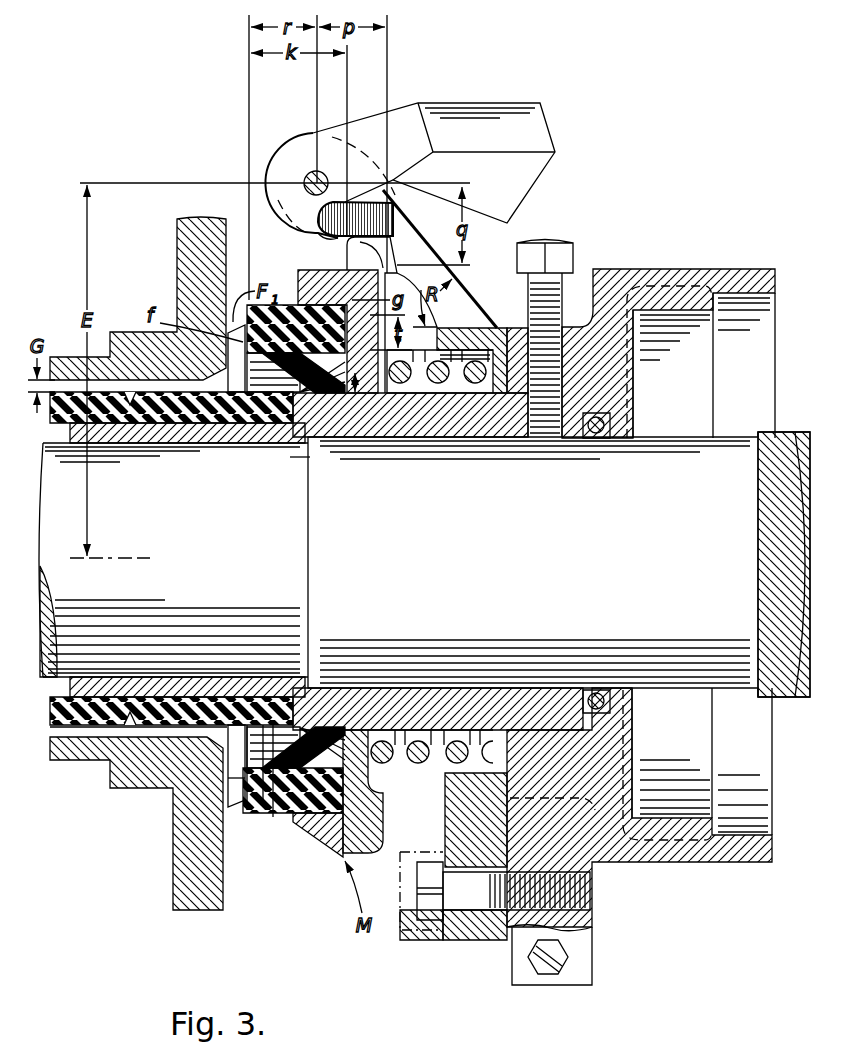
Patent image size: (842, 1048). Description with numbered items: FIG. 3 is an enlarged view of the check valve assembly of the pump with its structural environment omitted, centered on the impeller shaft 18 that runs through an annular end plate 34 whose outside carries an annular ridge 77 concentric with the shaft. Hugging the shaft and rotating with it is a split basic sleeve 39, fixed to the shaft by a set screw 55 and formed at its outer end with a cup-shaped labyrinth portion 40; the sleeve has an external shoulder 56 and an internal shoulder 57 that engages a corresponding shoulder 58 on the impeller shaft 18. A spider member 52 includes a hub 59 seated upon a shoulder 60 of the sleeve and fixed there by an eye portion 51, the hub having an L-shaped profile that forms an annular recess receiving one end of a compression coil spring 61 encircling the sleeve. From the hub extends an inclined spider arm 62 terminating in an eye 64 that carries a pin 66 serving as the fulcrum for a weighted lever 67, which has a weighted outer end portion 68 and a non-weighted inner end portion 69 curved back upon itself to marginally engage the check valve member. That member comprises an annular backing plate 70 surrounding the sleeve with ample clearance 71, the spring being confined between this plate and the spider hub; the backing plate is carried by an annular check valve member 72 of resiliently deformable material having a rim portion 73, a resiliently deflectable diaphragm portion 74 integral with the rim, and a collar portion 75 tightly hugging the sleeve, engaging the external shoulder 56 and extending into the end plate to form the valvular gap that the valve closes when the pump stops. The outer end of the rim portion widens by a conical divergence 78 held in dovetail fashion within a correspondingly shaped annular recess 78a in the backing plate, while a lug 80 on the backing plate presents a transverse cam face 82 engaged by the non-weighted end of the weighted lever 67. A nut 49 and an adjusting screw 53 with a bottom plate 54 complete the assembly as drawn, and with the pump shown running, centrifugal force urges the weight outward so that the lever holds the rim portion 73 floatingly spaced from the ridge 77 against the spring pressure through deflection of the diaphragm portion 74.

The impeller shaft 18 is at (173, 560).
The annular end plate 34 is at (177, 267).
The basic sleeve 39 is at (410, 423).
The cup-shaped labyrinth portion 40 is at (680, 268).
The nut 49 is at (548, 978).
The eye portion 51 is at (472, 941).
The spider member 52 is at (466, 276).
The adjusting screw 53 is at (423, 877).
The bottom plate 54 is at (420, 938).
The set screw 55 is at (558, 241).
The external shoulder 56 is at (243, 443).
The internal shoulder 57 is at (307, 443).
The shoulder 58 is at (310, 538).
The hub 59 is at (490, 343).
The shoulder 60 is at (500, 395).
The compression coil spring 61 is at (437, 385).
The spider arm 62 is at (460, 306).
The eye 64 is at (292, 142).
The pin 66 is at (310, 177).
The weighted lever 67 is at (330, 130).
The weighted outer end portion 68 is at (488, 116).
The non-weighted inner end portion 69 is at (293, 218).
The annular backing plate 70 is at (292, 845).
The clearance 71 is at (357, 393).
The annular check valve member 72 is at (238, 810).
The rim portion 73 is at (263, 810).
The diaphragm portion 74 is at (273, 820).
The collar portion 75 is at (160, 728).
The annular ridge 77 is at (231, 787).
The conical divergence 78 is at (347, 810).
The annular recess 78a is at (325, 840).
The lug 80 is at (360, 257).
The transverse cam face 82 is at (340, 255).